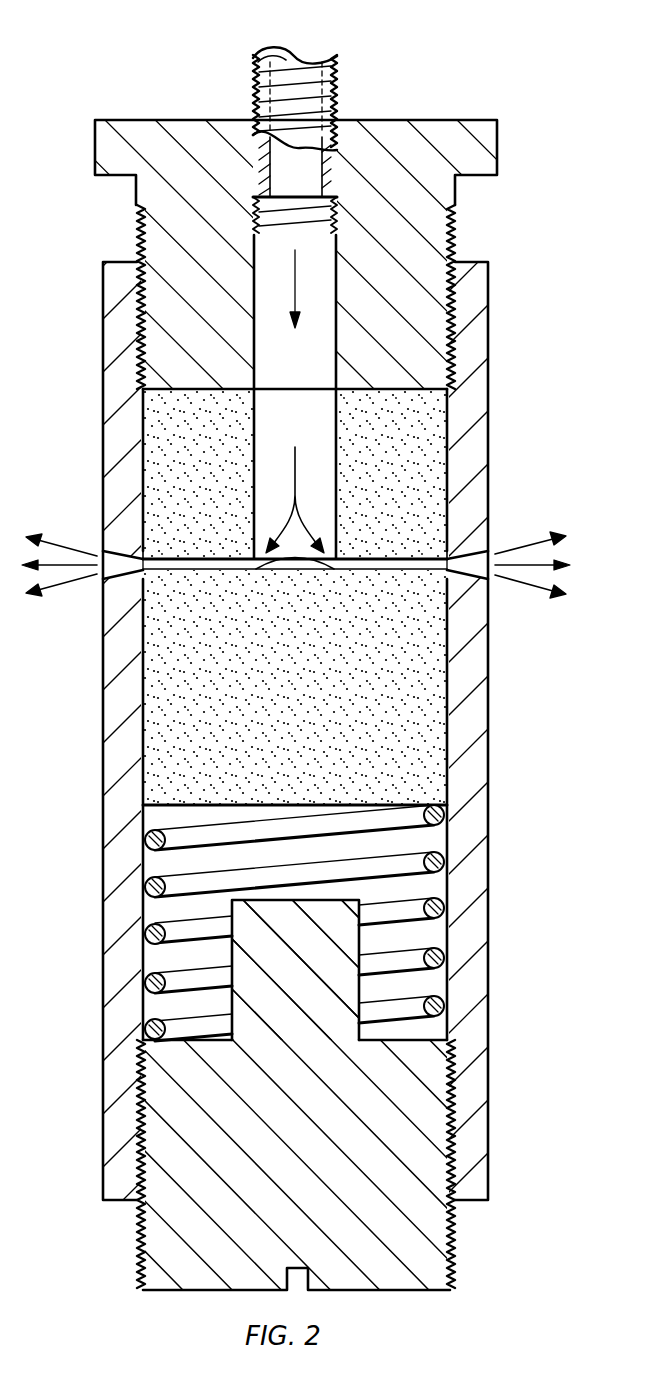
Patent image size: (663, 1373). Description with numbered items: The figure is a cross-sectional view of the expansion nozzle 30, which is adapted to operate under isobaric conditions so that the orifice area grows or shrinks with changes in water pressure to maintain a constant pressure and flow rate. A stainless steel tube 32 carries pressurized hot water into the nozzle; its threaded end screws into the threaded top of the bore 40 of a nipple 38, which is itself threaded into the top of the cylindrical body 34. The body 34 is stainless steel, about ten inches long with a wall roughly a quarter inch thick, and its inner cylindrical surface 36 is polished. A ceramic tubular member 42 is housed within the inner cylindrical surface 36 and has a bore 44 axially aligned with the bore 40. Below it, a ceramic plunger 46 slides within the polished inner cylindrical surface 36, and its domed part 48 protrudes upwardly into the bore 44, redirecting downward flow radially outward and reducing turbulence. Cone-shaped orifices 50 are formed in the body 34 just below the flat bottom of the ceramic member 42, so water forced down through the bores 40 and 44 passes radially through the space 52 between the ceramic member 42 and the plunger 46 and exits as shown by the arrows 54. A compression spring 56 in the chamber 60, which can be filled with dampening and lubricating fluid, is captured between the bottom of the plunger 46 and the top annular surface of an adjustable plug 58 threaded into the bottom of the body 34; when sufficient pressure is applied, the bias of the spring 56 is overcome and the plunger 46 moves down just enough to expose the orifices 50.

The expansion nozzle 30 is at (142, 60).
The stainless steel tube 32 is at (338, 86).
The cylindrical body 34 is at (488, 402).
The inner cylindrical surface 36 is at (428, 706).
The nipple 38 is at (460, 200).
The bore 40 is at (336, 330).
The ceramic tubular member 42 is at (430, 468).
The bore 44 is at (334, 432).
The ceramic plunger 46 is at (166, 683).
The domed part 48 is at (290, 572).
The orifices 50 is at (488, 604).
The space 52 is at (217, 572).
The arrows 54 is at (534, 544).
The compression spring 56 is at (428, 840).
The adjustable plug 58 is at (434, 1222).
The chamber 60 is at (430, 892).